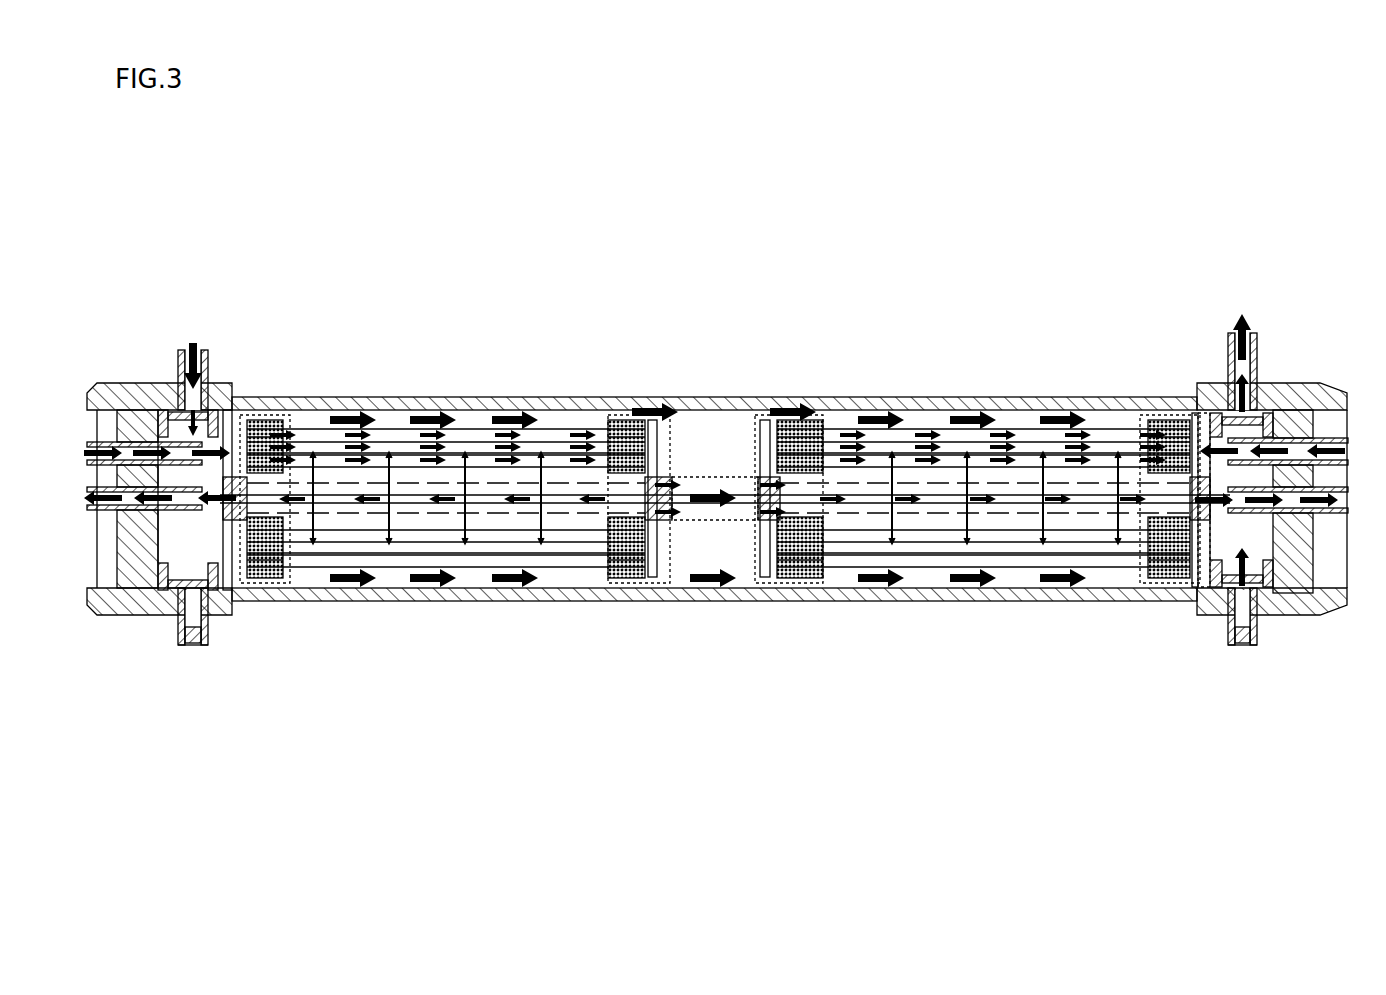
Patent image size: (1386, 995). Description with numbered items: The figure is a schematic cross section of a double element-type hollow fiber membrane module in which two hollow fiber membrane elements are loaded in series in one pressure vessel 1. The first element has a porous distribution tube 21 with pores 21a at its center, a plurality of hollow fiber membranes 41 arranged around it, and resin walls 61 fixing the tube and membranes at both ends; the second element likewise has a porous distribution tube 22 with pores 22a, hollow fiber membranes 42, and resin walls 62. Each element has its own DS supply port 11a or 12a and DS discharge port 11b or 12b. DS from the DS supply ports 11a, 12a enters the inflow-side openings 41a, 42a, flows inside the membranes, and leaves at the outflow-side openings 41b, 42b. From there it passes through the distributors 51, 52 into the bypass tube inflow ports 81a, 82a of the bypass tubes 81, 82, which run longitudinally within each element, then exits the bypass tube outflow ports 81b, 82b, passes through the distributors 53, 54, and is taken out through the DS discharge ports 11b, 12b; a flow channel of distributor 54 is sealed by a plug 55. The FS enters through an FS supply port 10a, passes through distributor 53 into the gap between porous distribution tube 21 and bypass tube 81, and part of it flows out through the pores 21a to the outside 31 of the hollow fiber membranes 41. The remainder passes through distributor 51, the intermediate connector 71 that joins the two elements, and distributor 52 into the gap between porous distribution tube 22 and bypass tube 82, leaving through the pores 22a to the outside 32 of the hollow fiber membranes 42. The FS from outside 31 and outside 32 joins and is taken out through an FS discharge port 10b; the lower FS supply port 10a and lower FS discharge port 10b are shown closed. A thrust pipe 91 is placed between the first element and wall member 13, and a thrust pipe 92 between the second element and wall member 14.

The pressure vessel 1 is at (433, 403).
The FS supply port 10a is at (182, 395).
The FS discharge port 10b is at (1230, 345).
The DS supply port 11a is at (103, 442).
The DS discharge port 11b is at (97, 512).
The DS supply port 12a is at (1322, 438).
The DS discharge port 12b is at (1338, 515).
The wall member 13 is at (140, 592).
The wall member 14 is at (1302, 593).
The porous distribution tube 21 is at (485, 517).
The pores 21a is at (386, 517).
The porous distribution tube 22 is at (1018, 517).
The pores 22a is at (850, 517).
The outside of hollow fiber membranes 31 is at (550, 457).
The outside of hollow fiber membranes 32 is at (1030, 455).
The hollow fiber membranes 41 is at (382, 430).
The inflow-side openings 41a is at (231, 425).
The outflow-side openings 41b is at (652, 470).
The hollow fiber membranes 42 is at (925, 430).
The inflow-side openings 42a is at (1195, 430).
The outflow-side openings 42b is at (765, 470).
The distributor 51 is at (660, 522).
The distributor 52 is at (770, 522).
The distributor 53 is at (235, 522).
The distributor 54 is at (1197, 590).
The plug 55 is at (1215, 590).
The resin walls 61 is at (285, 590).
The resin walls 62 is at (818, 583).
The intermediate connector 71 is at (708, 477).
The bypass tube 81 is at (433, 517).
The bypass tube inflow port 81a is at (620, 470).
The bypass tube outflow port 81b is at (270, 470).
The bypass tube 82 is at (935, 517).
The bypass tube inflow port 82a is at (805, 470).
The bypass tube outflow port 82b is at (1160, 440).
The thrust pipe 91 is at (193, 645).
The thrust pipe 92 is at (1242, 647).